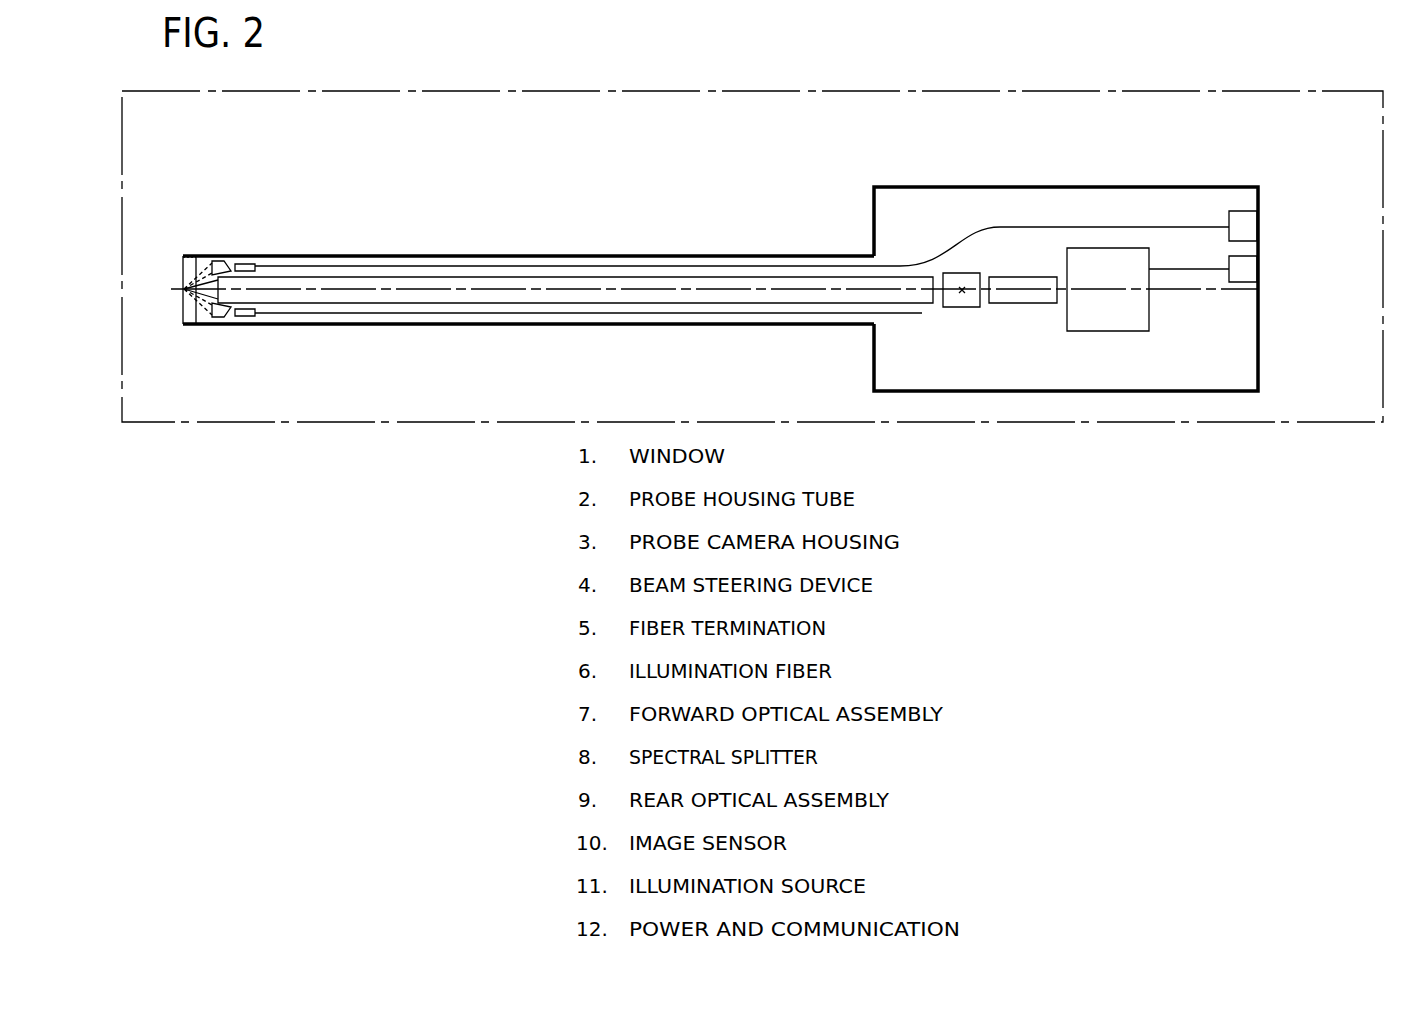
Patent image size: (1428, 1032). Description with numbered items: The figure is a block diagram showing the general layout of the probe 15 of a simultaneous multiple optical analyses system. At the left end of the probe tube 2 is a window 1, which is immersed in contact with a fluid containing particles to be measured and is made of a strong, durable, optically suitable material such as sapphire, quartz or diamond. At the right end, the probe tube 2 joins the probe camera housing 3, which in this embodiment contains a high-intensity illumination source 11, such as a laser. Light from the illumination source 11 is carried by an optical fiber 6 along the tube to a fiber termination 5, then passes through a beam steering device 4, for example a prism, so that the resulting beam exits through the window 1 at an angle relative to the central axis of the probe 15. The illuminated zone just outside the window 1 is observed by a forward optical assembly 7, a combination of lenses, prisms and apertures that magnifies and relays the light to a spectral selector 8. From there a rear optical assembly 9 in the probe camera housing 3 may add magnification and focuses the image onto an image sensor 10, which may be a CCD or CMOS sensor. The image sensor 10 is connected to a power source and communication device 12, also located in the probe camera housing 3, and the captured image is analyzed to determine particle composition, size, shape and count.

The window 1 is at (182, 266).
The probe tube 2 is at (387, 253).
The probe camera housing 3 is at (920, 183).
The beam steering device 4 is at (221, 256).
The fiber termination 5 is at (249, 261).
The optical fiber 6 is at (451, 263).
The forward optical assembly 7 is at (551, 274).
The spectral selector 8 is at (964, 270).
The rear optical assembly 9 is at (1024, 273).
The image sensor 10 is at (1121, 245).
The illumination source 11 is at (1262, 213).
The power source and communication device 12 is at (1262, 260).
The probe 15 is at (604, 89).